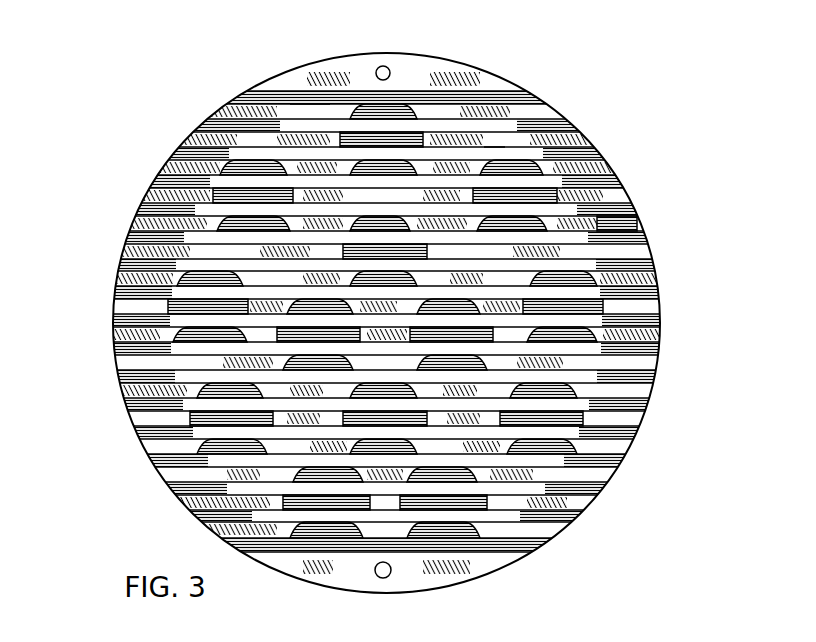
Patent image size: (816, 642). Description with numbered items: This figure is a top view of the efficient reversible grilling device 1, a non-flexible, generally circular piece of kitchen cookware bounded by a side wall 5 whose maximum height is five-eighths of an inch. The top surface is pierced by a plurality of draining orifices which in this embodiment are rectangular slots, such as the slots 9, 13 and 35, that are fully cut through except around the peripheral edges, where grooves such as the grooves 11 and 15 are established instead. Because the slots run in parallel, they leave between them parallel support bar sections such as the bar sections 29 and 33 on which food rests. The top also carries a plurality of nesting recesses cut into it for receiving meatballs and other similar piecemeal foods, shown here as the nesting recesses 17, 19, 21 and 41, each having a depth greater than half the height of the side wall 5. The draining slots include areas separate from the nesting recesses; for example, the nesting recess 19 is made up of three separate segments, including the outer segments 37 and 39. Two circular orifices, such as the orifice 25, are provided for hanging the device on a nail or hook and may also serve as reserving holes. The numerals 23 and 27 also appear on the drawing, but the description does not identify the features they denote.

The efficient reversible grilling device 1 is at (683, 190).
The side wall 5 is at (641, 423).
The slot 9 is at (560, 227).
The groove 11 is at (633, 240).
The slot 13 is at (178, 293).
The groove 15 is at (118, 262).
The nesting recess 17 is at (180, 145).
The nesting recess 19 is at (385, 138).
The nesting recess 21 is at (230, 305).
The strip segment 23 is at (243, 420).
The circular orifice 25 is at (380, 578).
The strip segment 27 is at (585, 307).
The support bar section 29 is at (303, 112).
The support bar section 33 is at (497, 142).
The slot 35 is at (243, 92).
The outer segment 37 is at (395, 108).
The outer segment 39 is at (493, 138).
The nesting recess 41 is at (558, 418).